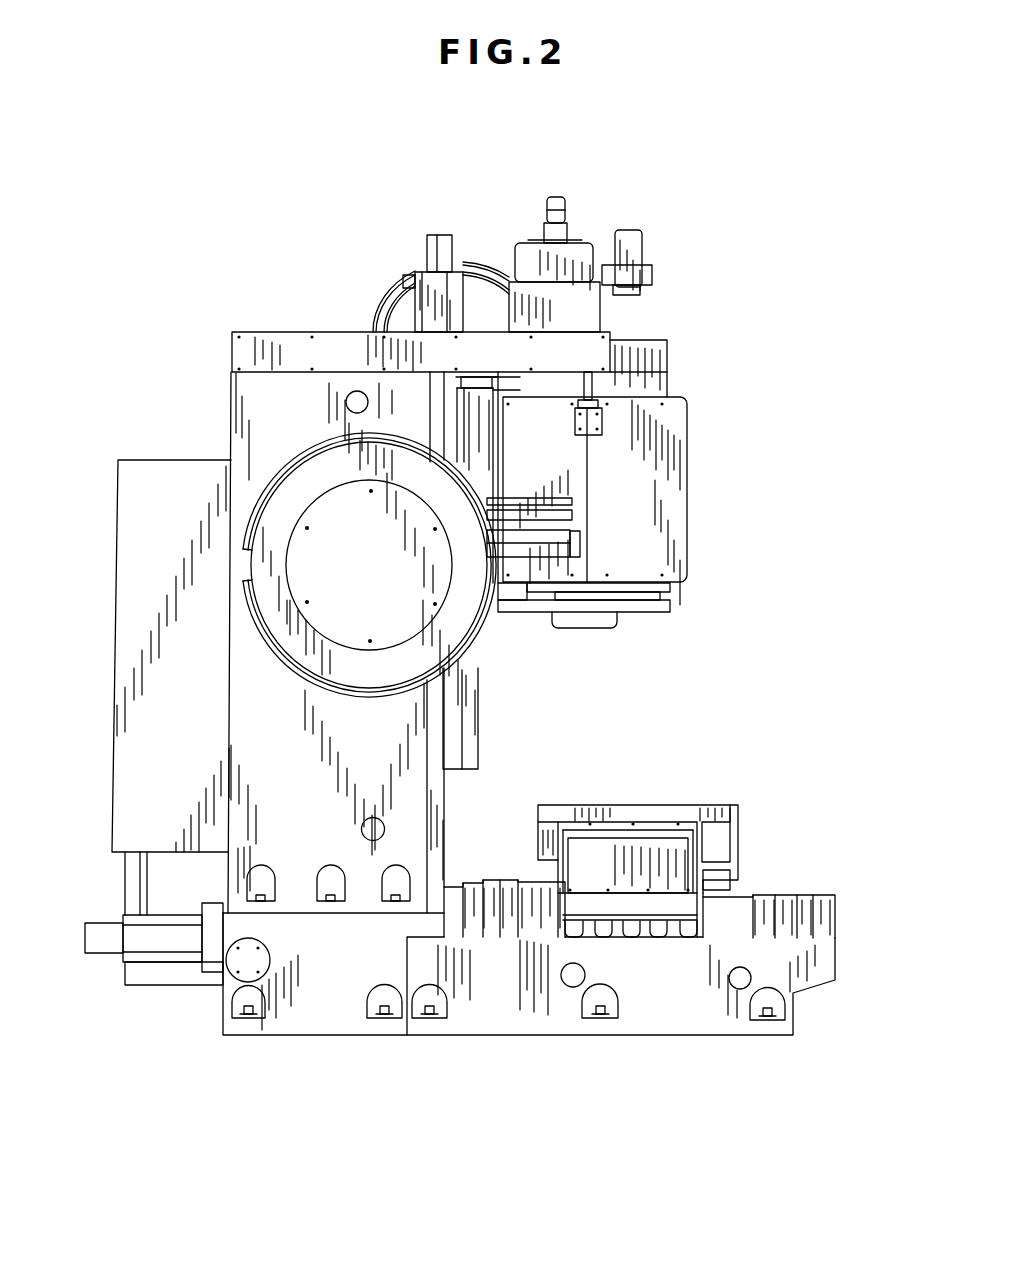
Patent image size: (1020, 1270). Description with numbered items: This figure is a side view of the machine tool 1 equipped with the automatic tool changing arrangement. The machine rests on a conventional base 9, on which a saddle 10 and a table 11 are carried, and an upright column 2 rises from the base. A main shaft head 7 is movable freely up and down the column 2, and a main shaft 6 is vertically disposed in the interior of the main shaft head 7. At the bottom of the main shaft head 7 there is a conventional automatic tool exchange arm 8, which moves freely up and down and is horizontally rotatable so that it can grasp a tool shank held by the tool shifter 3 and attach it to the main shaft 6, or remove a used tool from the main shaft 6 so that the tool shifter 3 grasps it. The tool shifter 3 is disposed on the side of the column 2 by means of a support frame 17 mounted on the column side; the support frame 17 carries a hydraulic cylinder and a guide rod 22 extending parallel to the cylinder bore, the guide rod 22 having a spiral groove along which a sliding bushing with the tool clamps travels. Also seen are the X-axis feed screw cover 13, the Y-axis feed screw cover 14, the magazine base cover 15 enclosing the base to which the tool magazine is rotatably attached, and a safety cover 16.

The machine tool 1 is at (316, 316).
The column 2 is at (253, 398).
The tool shifter 3 is at (560, 518).
The main shaft 6 is at (655, 597).
The main shaft head 7 is at (652, 528).
The automatic tool exchange arm 8 is at (657, 613).
The base 9 is at (692, 1007).
The saddle 10 is at (690, 908).
The table 11 is at (685, 808).
The X-axis feed screw cover 13 is at (610, 833).
The Y-axis feed screw cover 14 is at (492, 883).
The magazine base cover 15 is at (275, 480).
The safety cover 16 is at (298, 640).
The support frame 17 is at (560, 500).
The guide rod 22 is at (517, 537).